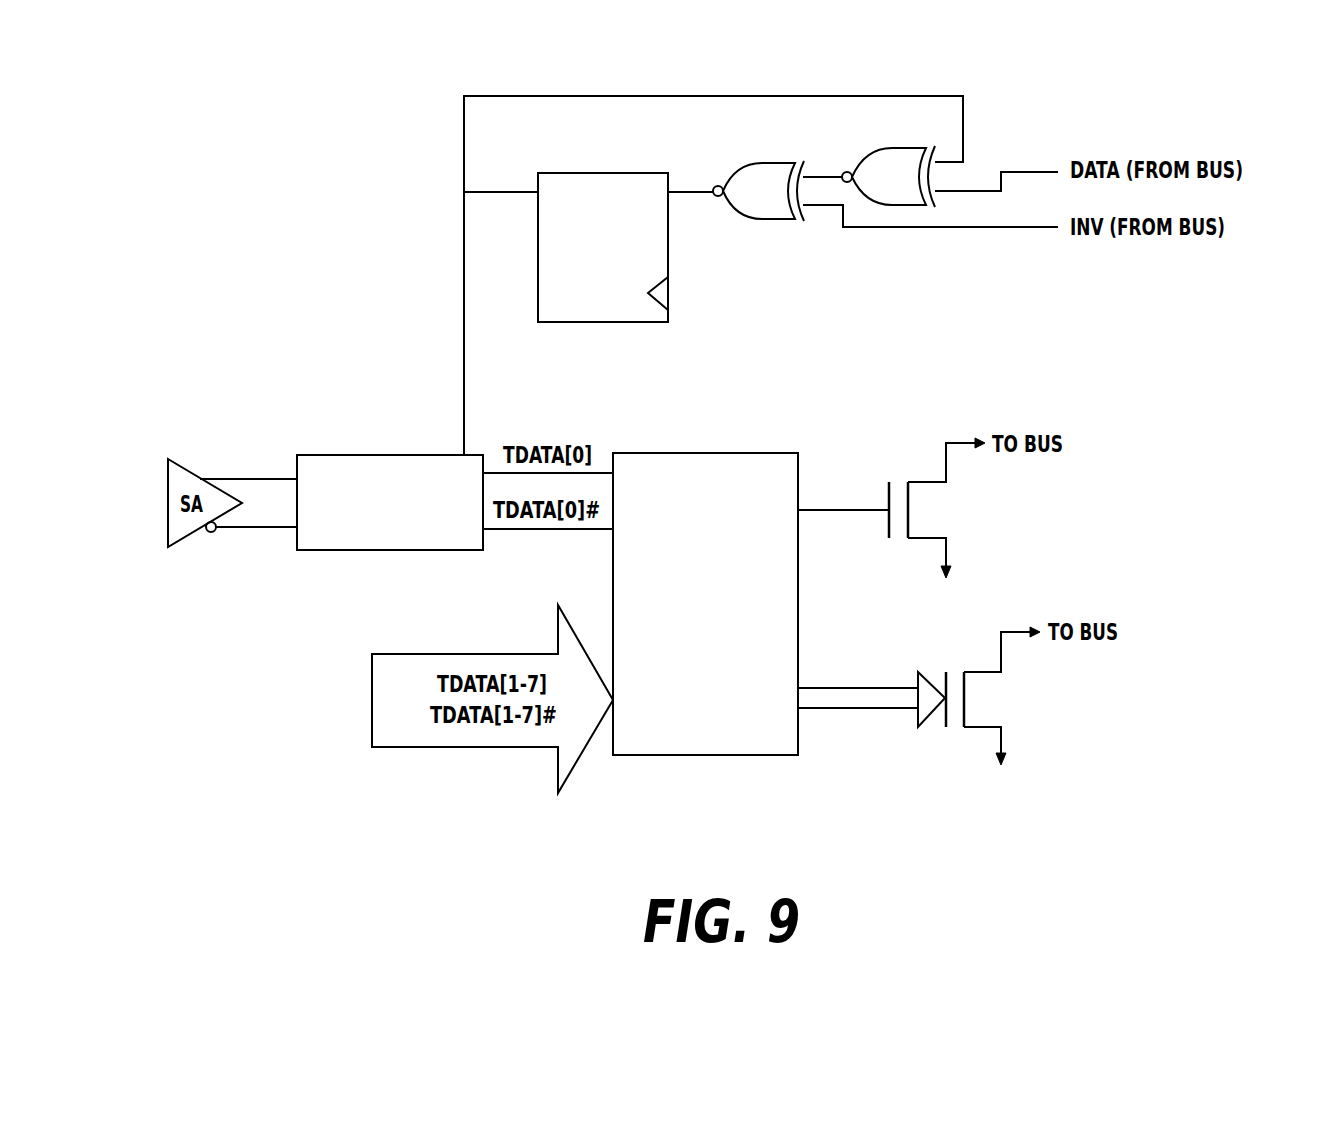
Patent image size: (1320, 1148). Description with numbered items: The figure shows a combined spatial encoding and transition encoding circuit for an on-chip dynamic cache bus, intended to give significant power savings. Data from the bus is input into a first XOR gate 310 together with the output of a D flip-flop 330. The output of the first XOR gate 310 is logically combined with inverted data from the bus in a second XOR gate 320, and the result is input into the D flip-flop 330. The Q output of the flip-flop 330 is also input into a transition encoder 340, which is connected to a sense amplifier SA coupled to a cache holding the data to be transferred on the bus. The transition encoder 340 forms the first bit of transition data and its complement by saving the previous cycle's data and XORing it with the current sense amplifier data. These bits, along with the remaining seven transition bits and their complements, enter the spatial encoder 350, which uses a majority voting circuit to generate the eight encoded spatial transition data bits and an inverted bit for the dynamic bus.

The first XOR gate 310 is at (892, 147).
The second XOR gate 320 is at (762, 222).
The D flip-flop 330 is at (603, 322).
The transition encoder 340 is at (390, 455).
The spatial encoder 350 is at (707, 453).